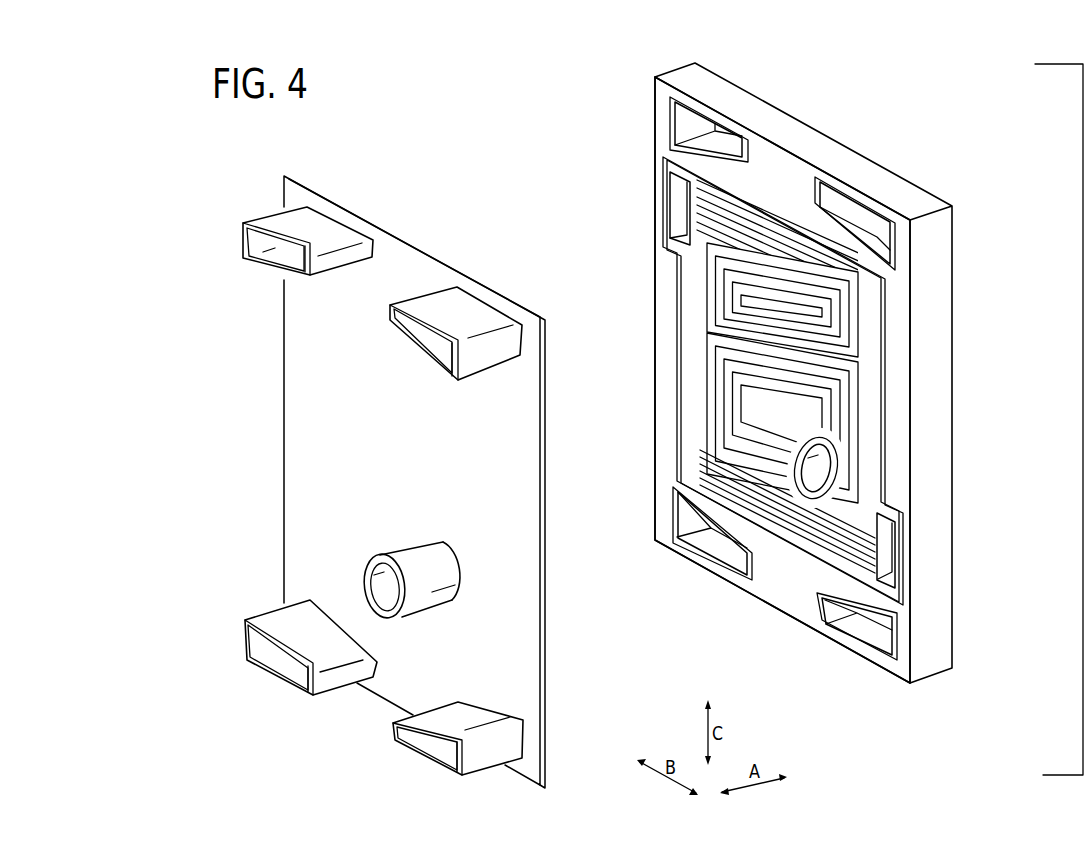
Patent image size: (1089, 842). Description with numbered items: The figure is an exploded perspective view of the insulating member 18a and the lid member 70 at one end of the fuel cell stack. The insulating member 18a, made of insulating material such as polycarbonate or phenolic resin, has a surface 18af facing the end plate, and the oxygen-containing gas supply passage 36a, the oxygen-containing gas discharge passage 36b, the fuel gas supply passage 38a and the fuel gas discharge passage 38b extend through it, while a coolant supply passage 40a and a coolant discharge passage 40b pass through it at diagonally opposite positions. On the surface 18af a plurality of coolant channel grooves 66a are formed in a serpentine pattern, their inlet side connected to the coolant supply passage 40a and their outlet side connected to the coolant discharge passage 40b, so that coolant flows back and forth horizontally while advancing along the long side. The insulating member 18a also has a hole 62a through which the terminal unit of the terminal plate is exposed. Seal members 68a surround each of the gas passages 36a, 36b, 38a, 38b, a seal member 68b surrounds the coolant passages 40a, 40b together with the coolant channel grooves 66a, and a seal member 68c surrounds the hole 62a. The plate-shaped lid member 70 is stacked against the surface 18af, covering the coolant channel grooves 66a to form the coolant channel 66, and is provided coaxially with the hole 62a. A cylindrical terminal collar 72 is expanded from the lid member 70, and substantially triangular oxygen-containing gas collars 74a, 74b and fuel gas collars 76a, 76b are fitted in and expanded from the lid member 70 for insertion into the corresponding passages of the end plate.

The lid member 70 is at (281, 173).
The cylindrical terminal collar 72 is at (415, 562).
The oxygen-containing gas collar 74a is at (438, 348).
The oxygen-containing gas collar 74b is at (275, 662).
The fuel gas collar 76a is at (258, 217).
The fuel gas collar 76b is at (481, 722).
The insulating member 18a is at (878, 167).
The surface 18af is at (795, 594).
The oxygen-containing gas supply passage 36a is at (877, 238).
The oxygen-containing gas discharge passage 36b is at (683, 517).
The fuel gas supply passage 38a is at (687, 132).
The fuel gas discharge passage 38b is at (870, 634).
The coolant supply passage 40a is at (680, 199).
The coolant discharge passage 40b is at (887, 549).
The hole 62a is at (832, 472).
The coolant channel 66 is at (737, 376).
The coolant channel grooves 66a is at (722, 271).
The seal member 68a is at (667, 112).
The seal member 68b is at (897, 393).
The seal member 68c is at (797, 452).